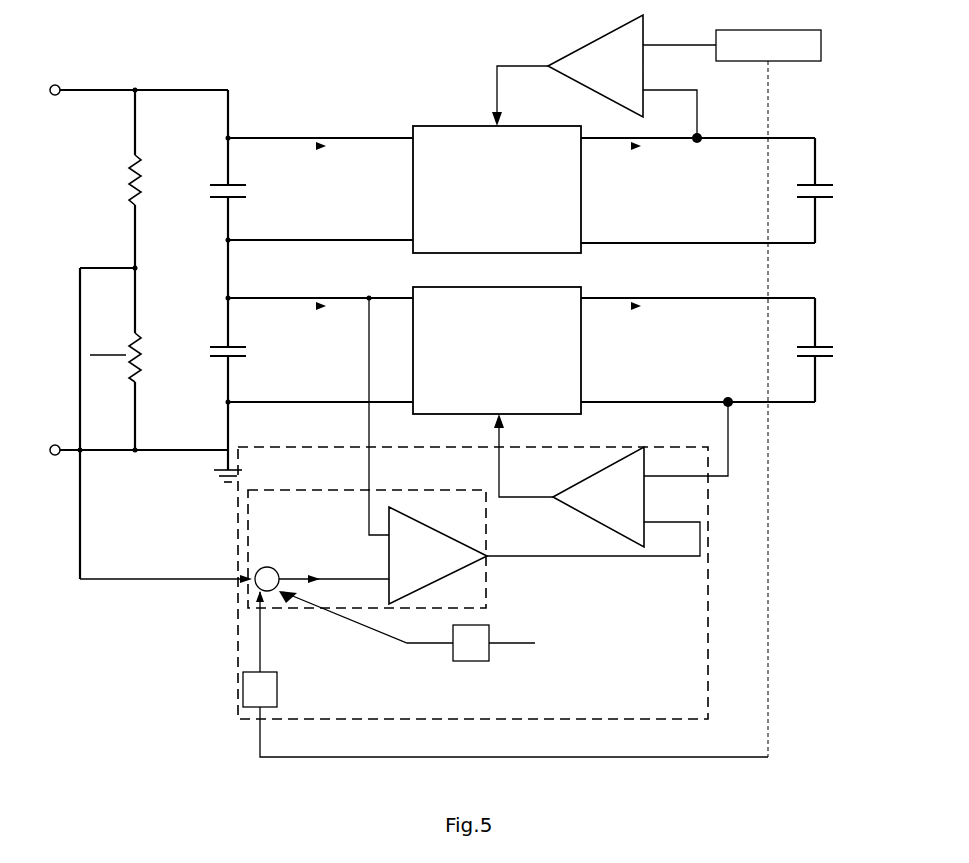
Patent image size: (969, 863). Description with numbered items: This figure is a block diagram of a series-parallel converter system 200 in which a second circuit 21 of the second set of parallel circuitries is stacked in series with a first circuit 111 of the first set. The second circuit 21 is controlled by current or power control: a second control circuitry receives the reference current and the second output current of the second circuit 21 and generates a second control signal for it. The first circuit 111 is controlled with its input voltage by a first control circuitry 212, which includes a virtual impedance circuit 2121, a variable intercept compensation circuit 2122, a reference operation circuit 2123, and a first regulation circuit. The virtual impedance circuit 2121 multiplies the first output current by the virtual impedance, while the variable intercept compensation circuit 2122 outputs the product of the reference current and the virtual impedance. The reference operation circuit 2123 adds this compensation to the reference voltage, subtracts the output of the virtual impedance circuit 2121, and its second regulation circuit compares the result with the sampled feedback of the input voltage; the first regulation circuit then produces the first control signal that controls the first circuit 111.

The series-parallel converter system 200 is at (312, 55).
The second circuit 21 is at (410, 126).
The first circuit 111 is at (413, 298).
The first control circuitry 212 is at (708, 516).
The virtual impedance circuit 2121 is at (490, 626).
The variable intercept compensation circuit 2122 is at (277, 706).
The reference operation circuit 2123 is at (487, 549).